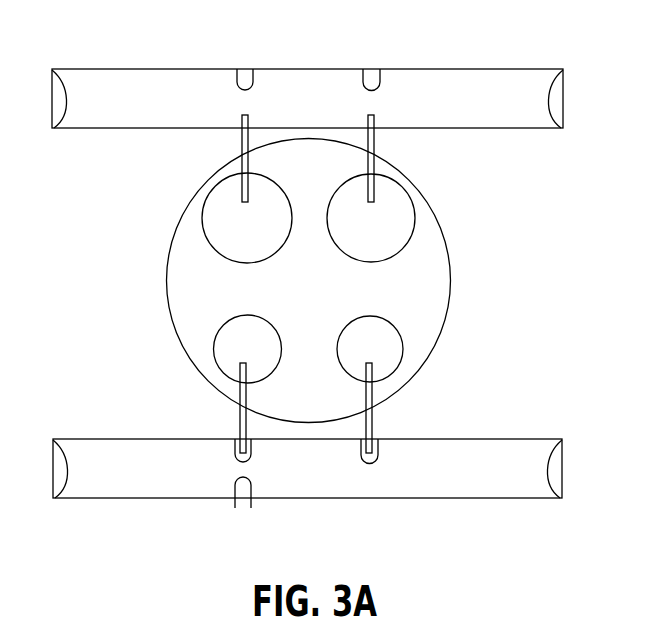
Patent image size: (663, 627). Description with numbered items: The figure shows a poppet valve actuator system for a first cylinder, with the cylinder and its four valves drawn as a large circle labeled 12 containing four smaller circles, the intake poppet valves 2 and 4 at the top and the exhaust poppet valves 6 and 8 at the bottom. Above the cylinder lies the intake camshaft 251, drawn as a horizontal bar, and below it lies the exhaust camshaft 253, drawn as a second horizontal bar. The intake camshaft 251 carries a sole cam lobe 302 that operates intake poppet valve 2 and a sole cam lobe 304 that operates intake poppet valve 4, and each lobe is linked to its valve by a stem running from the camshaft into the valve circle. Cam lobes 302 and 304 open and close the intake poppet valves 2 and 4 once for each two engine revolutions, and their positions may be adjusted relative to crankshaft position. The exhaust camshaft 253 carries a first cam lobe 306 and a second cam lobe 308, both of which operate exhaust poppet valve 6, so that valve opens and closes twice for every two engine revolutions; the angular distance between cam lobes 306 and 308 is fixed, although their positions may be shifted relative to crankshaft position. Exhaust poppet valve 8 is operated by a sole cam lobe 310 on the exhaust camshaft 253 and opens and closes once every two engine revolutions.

The intake camshaft 251 is at (100, 128).
The exhaust camshaft 253 is at (100, 498).
The sensor body 12 is at (333, 332).
The intake poppet valve 2 is at (247, 218).
The intake poppet valve 4 is at (371, 218).
The exhaust poppet valve 6 is at (248, 349).
The exhaust poppet valve 8 is at (370, 349).
The cam lobe 302 is at (249, 72).
The cam lobe 304 is at (374, 72).
The first cam lobe 306 is at (237, 437).
The second cam lobe 308 is at (242, 490).
The cam lobe 310 is at (376, 438).